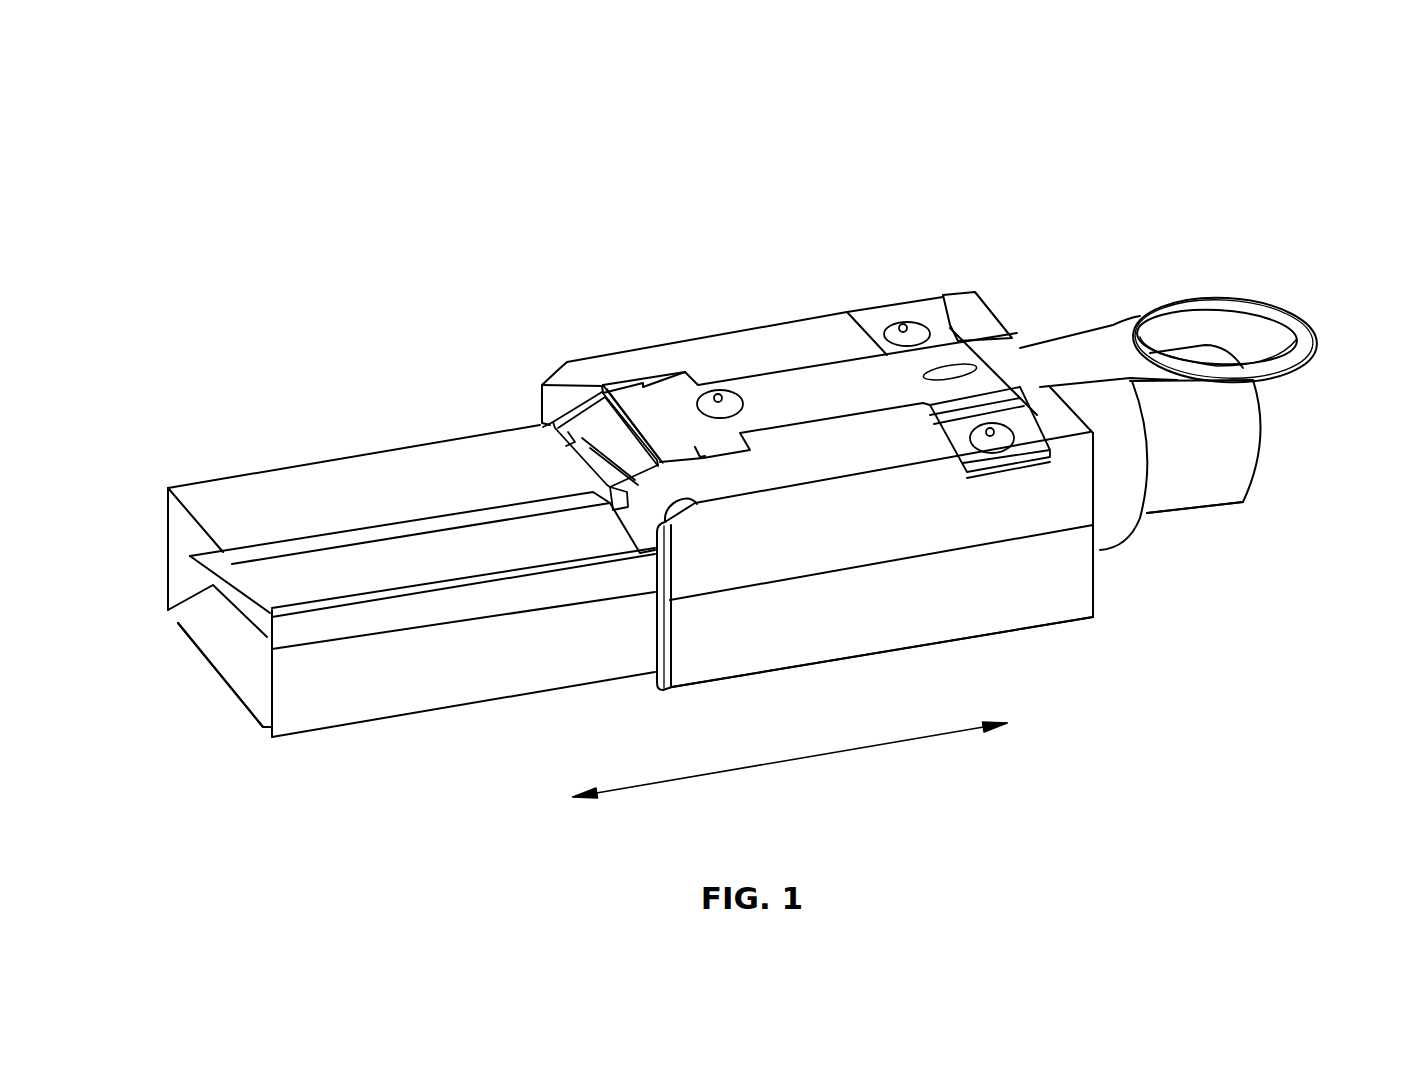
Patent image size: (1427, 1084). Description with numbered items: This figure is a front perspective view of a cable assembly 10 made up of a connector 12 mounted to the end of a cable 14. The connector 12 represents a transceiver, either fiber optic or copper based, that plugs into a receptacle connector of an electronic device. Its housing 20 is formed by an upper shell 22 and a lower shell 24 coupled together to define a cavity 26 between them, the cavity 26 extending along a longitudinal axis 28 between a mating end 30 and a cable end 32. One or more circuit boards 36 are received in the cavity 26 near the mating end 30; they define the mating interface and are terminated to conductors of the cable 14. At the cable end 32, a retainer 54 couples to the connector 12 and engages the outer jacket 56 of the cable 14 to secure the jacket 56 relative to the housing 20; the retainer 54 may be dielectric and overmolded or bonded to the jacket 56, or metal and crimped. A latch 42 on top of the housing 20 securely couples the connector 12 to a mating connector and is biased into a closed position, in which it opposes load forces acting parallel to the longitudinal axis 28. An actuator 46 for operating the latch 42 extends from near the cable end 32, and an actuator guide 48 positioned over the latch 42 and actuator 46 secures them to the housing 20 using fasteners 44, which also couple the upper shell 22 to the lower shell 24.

The cable assembly 10 is at (1239, 121).
The connector 12 is at (333, 478).
The cable 14 is at (1263, 443).
The housing 20 is at (1035, 645).
The upper shell 22 is at (617, 365).
The lower shell 24 is at (803, 650).
The cavity 26 is at (232, 694).
The longitudinal axis 28 is at (922, 738).
The mating end 30 is at (145, 460).
The cable end 32 is at (1356, 368).
The circuit boards 36 is at (213, 587).
The latch 42 is at (543, 432).
The fasteners 44 is at (718, 398).
The actuator 46 is at (1090, 347).
The actuator guide 48 is at (943, 353).
The retainer 54 is at (1107, 537).
The outer jacket 56 is at (1200, 500).